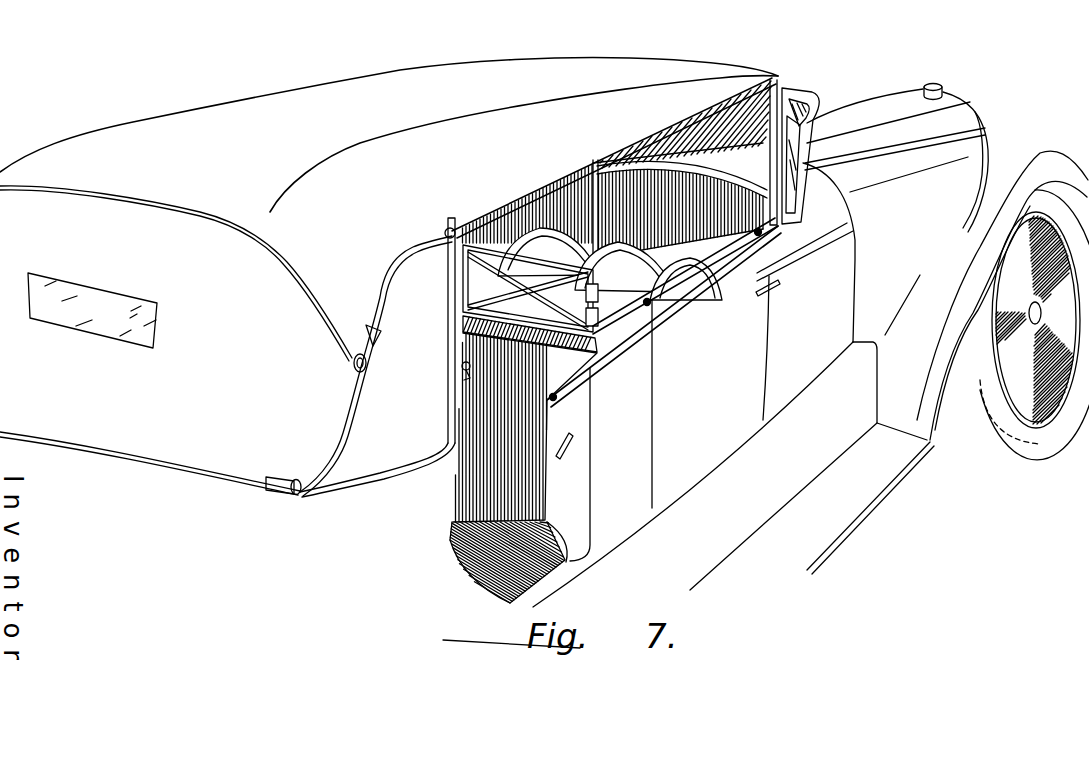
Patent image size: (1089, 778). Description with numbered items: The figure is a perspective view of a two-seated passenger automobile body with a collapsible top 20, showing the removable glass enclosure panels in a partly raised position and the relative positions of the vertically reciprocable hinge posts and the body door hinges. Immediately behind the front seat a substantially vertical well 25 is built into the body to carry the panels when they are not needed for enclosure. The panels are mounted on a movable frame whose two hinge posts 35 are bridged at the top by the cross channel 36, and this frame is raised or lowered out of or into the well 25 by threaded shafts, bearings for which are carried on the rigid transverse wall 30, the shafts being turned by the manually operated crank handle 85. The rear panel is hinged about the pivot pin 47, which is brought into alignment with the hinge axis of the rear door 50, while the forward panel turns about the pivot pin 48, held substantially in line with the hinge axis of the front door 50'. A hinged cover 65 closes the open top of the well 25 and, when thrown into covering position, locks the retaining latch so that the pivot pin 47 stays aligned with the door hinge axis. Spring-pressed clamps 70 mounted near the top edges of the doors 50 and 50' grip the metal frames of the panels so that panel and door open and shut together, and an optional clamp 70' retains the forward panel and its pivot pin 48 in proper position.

The collapsible top 20 is at (284, 142).
The well 25 is at (480, 308).
The transverse wall 30 is at (490, 398).
The hinge post 35 is at (676, 279).
The cross channel 36 is at (487, 245).
The pivot pin 47 is at (625, 267).
The pivot pin 48 is at (549, 252).
The door 50 is at (570, 464).
The front door 50' is at (716, 392).
The hinged cover 65 is at (473, 340).
The spring-pressed clamp 70 is at (658, 328).
The clamp 70' is at (674, 327).
The crank handle 85 is at (460, 370).